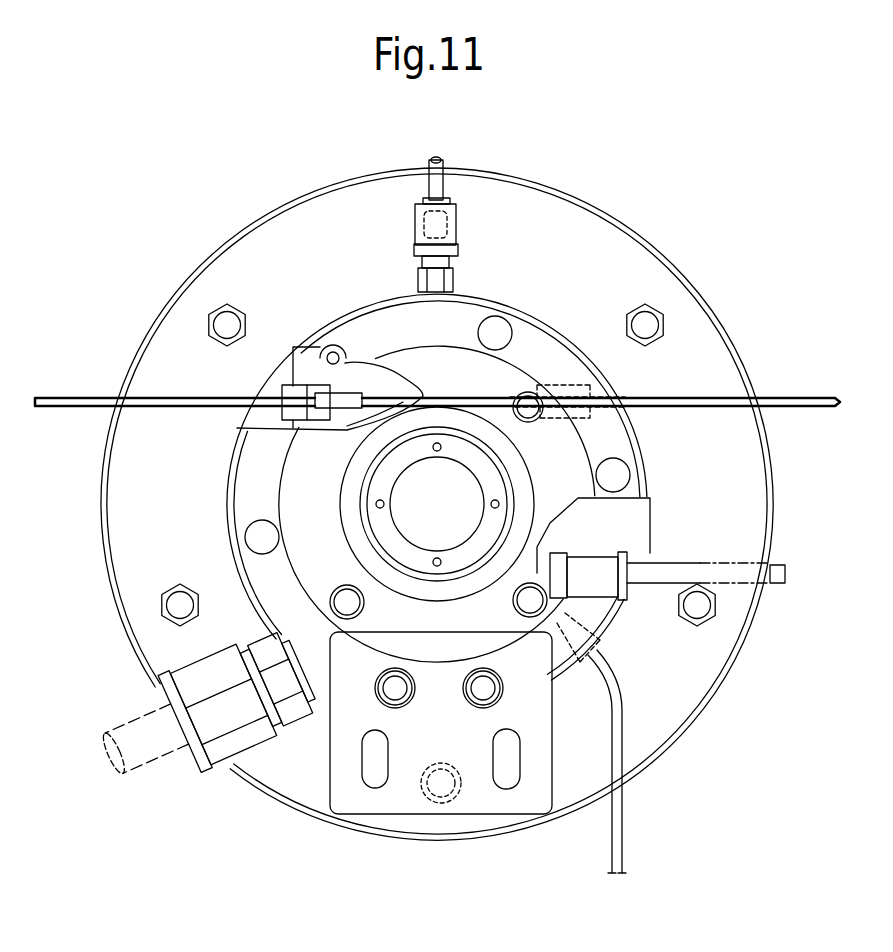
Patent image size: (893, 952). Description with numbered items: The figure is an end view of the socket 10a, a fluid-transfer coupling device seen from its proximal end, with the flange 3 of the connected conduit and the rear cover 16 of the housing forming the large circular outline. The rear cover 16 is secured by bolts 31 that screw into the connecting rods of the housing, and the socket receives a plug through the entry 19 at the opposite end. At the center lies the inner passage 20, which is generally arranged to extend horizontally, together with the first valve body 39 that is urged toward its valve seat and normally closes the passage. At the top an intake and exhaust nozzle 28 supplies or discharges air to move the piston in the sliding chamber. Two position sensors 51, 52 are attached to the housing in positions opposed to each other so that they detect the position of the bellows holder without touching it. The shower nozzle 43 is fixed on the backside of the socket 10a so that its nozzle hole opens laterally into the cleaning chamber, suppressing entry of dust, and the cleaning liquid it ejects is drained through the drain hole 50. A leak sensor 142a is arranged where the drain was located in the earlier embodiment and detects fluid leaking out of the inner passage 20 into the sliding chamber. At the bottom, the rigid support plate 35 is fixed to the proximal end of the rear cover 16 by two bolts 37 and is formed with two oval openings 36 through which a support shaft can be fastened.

The socket 10a is at (696, 164).
The flange 3 is at (557, 450).
The rear cover 16 is at (540, 357).
The entry 19 is at (223, 318).
The inner passage 20 is at (454, 507).
The intake and exhaust nozzle 28 is at (420, 233).
The bolt 31 is at (252, 520).
The support plate 35 is at (530, 805).
The oval opening 36 is at (517, 763).
The bolt 37 is at (390, 690).
The first valve body 39 is at (410, 553).
The shower nozzle 43 is at (628, 535).
The drain hole 50 is at (222, 752).
The position sensor 51 is at (75, 397).
The position sensor 52 is at (793, 397).
The leak sensor 142a is at (622, 829).